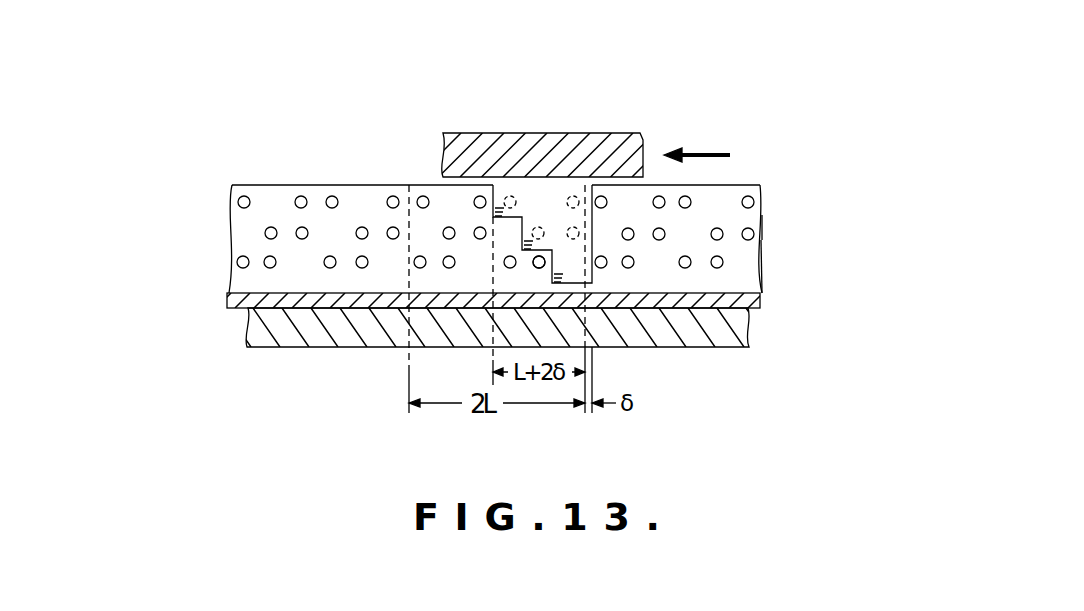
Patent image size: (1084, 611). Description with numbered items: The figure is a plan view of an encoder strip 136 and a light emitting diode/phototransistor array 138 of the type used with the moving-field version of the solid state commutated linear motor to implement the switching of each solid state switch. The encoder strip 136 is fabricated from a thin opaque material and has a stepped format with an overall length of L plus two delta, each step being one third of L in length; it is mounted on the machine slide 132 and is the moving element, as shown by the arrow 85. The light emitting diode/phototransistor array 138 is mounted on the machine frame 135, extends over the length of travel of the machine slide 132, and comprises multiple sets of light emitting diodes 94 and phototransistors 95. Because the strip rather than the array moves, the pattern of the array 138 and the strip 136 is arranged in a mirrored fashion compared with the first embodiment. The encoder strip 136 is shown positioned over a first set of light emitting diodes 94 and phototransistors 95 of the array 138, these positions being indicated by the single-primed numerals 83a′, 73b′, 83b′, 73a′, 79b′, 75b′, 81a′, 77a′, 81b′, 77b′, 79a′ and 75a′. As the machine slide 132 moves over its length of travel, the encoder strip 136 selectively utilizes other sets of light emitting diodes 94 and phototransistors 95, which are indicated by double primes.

The light emitting diode/phototransistor array 138 is at (780, 195).
The light emitting diodes 94 is at (767, 229).
The strip edge 95 is at (761, 266).
The encoder strip 136 is at (593, 275).
The machine frame 135 is at (750, 329).
The machine slide 132 is at (645, 145).
The arrow 85 is at (724, 147).
The hole 83a′ is at (421, 196).
The hole 73b′ is at (480, 196).
The hole 83b′ is at (511, 196).
The hole 73a′ is at (574, 196).
The hole 79b′ is at (447, 227).
The hole 75b′ is at (479, 227).
The hole 81a′ is at (538, 227).
The hole 77a′ is at (570, 228).
The hole 81b′ is at (443, 266).
The hole 77b′ is at (504, 265).
The hole 79a′ is at (534, 266).
The hole 75a′ is at (540, 268).